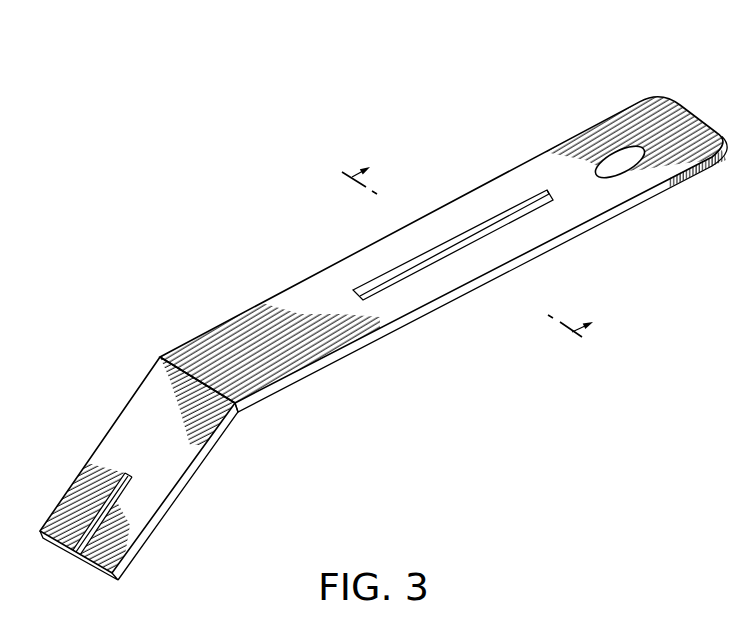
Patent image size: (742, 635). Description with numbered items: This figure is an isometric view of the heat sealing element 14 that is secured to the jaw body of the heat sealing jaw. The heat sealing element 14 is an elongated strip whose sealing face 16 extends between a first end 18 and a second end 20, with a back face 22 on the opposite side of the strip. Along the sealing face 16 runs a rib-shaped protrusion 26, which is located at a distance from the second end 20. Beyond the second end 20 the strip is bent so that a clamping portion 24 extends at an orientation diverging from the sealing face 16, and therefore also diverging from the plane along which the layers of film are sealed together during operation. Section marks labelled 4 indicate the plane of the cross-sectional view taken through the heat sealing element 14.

The heat sealing element 14 is at (383, 311).
The sealing face 16 is at (435, 273).
The first end 18 is at (570, 177).
The second end 20 is at (225, 343).
The back face 22 is at (587, 260).
The clamping portion 24 is at (148, 495).
The rib-shaped protrusion 26 is at (492, 220).
The section line 4- 4 is at (477, 240).